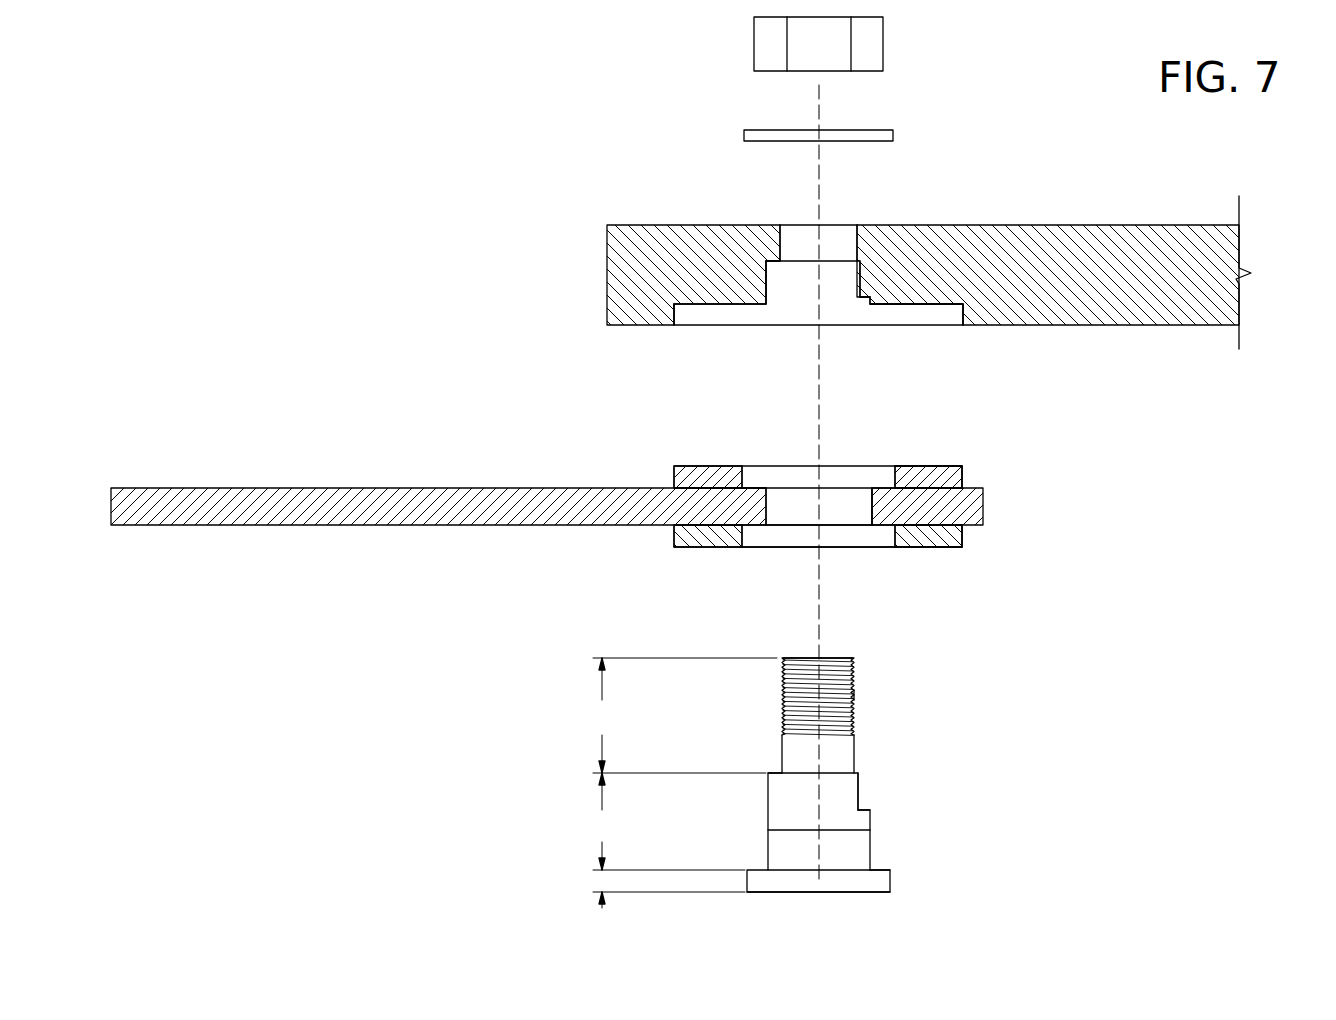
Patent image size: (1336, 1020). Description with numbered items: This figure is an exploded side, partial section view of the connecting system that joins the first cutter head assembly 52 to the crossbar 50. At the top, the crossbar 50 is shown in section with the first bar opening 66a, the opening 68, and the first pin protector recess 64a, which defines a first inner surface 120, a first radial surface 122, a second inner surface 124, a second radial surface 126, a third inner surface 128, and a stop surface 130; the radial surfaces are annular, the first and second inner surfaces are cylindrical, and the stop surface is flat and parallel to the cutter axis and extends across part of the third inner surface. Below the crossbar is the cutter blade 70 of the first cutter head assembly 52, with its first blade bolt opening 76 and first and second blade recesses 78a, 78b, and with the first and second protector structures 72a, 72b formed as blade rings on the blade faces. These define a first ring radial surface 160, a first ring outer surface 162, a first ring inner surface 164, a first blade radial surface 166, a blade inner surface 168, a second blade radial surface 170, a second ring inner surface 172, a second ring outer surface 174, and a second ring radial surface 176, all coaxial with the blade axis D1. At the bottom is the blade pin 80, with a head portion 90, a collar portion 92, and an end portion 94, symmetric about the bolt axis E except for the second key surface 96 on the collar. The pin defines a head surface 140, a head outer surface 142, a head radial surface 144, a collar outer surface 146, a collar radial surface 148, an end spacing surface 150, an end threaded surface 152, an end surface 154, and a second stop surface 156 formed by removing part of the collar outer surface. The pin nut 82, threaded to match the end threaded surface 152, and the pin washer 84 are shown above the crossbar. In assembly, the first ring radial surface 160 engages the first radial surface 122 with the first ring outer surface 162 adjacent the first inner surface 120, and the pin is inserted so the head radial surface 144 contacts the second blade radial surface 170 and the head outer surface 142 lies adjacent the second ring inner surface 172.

The crossbar 50 is at (1098, 238).
The first cutter head assembly 52 is at (536, 622).
The first pin protector recess 64a is at (935, 316).
The first bar opening 66a is at (752, 263).
The opening 68 is at (832, 262).
The cutter blade 70 is at (380, 508).
The first protector structure 72a is at (953, 478).
The second protector structure 72b is at (940, 542).
The first blade bolt opening 76 is at (840, 505).
The first blade recess 78a is at (776, 477).
The second blade recess 78b is at (780, 535).
The blade pin 80 is at (781, 700).
The pin nut 82 is at (872, 43).
The pin washer 84 is at (890, 131).
The head portion 90 is at (667, 916).
The collar portion 92 is at (667, 821).
The end portion 94 is at (683, 715).
The second key surface 96 is at (858, 787).
The first inner surface 120 is at (693, 326).
The first radial surface 122 is at (716, 306).
The second inner surface 124 is at (782, 282).
The second radial surface 126 is at (800, 263).
The third inner surface 128 is at (853, 263).
The stop surface 130 is at (858, 298).
The head surface 140 is at (857, 893).
The head outer surface 142 is at (892, 880).
The head radial surface 144 is at (878, 869).
The collar outer surface 146 is at (768, 812).
The collar radial surface 148 is at (773, 772).
The end spacing surface 150 is at (845, 748).
The end threaded surface 152 is at (853, 695).
The end surface 154 is at (841, 658).
The second stop surface 156 is at (866, 806).
The first ring radial surface 160 is at (935, 468).
The first ring outer surface 162 is at (963, 478).
The first ring inner surface 164 is at (895, 478).
The first blade radial surface 166 is at (755, 486).
The blade inner surface 168 is at (872, 510).
The second blade radial surface 170 is at (757, 527).
The second ring inner surface 172 is at (895, 537).
The second ring outer surface 174 is at (963, 533).
The second ring radial surface 176 is at (930, 547).
The blade axis D1 is at (815, 555).
The bolt axis E is at (818, 830).